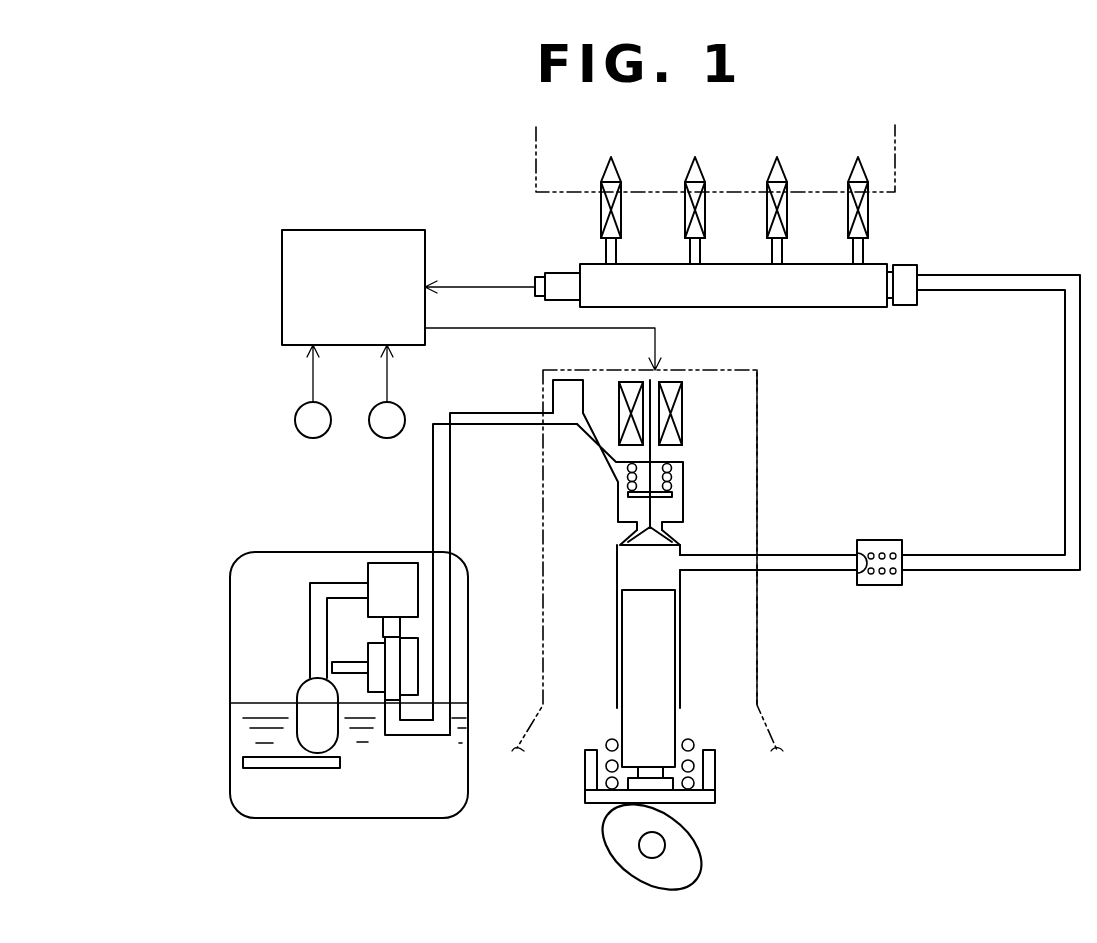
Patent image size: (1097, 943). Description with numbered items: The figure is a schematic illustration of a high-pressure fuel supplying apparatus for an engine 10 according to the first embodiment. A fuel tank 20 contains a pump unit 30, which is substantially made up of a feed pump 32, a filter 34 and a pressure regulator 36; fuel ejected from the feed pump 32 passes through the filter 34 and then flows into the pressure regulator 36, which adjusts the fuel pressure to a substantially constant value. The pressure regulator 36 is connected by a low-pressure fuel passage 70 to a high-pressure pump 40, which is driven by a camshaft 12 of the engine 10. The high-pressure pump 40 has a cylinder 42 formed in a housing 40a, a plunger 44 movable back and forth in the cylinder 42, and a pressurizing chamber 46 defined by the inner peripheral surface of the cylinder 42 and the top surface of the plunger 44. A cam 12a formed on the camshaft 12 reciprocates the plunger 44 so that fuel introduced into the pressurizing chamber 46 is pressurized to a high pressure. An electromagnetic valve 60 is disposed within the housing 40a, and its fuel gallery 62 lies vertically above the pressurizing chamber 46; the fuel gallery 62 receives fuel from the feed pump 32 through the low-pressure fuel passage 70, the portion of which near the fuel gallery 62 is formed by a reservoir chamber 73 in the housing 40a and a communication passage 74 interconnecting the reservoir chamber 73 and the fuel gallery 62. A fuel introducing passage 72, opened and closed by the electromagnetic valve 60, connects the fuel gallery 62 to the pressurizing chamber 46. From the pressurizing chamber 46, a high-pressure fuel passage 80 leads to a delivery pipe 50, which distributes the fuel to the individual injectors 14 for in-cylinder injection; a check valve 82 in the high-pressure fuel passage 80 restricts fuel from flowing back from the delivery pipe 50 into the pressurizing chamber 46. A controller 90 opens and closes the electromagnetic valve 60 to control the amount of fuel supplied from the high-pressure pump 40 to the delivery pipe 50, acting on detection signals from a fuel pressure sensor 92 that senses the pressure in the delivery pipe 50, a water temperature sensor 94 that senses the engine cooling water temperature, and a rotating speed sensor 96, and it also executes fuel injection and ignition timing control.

The engine 10 is at (897, 175).
The camshaft 12 is at (645, 843).
The cam 12a is at (688, 860).
The injectors 14 is at (870, 216).
The fuel tank 20 is at (230, 593).
The pump unit 30 is at (371, 649).
The feed pump 32 is at (338, 740).
The filter 34 is at (393, 575).
The pressure regulator 36 is at (420, 668).
The high-pressure pump 40 is at (790, 530).
The housing 40a is at (760, 405).
The cylinder 42 is at (682, 668).
The plunger 44 is at (625, 663).
The pressurizing chamber 46 is at (625, 575).
The delivery pipe 50 is at (808, 300).
The electromagnetic valve 60 is at (699, 421).
The fuel gallery 62 is at (673, 512).
The low-pressure fuel passage 70 is at (489, 413).
The fuel introducing passage 72 is at (643, 516).
The reservoir chamber 73 is at (572, 385).
The communication passage 74 is at (604, 463).
The high-pressure fuel passage 80 is at (987, 555).
The check valve 82 is at (886, 540).
The controller 90 is at (312, 230).
The fuel pressure sensor 92 is at (552, 273).
The water temperature sensor 94 is at (313, 438).
The rotating speed sensor 96 is at (387, 438).